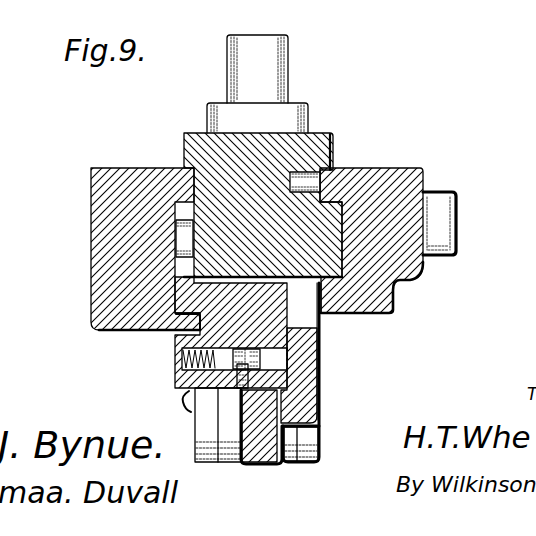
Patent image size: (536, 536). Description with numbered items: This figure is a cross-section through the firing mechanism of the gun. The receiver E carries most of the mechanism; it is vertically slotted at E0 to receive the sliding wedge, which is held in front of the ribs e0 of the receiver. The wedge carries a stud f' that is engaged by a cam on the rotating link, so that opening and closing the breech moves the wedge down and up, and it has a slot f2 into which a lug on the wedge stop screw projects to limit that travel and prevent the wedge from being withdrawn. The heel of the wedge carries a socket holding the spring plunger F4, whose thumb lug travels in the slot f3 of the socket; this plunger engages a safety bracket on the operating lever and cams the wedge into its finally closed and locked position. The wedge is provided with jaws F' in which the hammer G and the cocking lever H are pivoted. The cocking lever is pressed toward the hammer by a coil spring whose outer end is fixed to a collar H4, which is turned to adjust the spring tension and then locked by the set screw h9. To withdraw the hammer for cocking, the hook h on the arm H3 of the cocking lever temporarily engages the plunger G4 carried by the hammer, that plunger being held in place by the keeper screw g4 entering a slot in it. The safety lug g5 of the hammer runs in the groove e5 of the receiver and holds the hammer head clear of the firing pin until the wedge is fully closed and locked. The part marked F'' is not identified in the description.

The stud f' is at (274, 69).
The jaws F' is at (275, 116).
The slot of the socket f3 is at (307, 181).
The vertical slot E0 is at (357, 216).
The ribs e0 is at (326, 285).
The spring plunger F4 is at (455, 210).
The receiver E is at (138, 180).
The slot f2 is at (176, 245).
The groove e5 is at (94, 331).
The hammer G is at (176, 360).
The safety lug g5 is at (180, 352).
The keeper screw g4 is at (232, 373).
The set screw h9 is at (189, 406).
The cylinder F'' is at (272, 445).
The collar H4 is at (233, 463).
The cocking lever H is at (322, 425).
The hook h is at (321, 351).
The arm of the cocking lever H3 is at (321, 383).
The plunger G4 is at (281, 428).